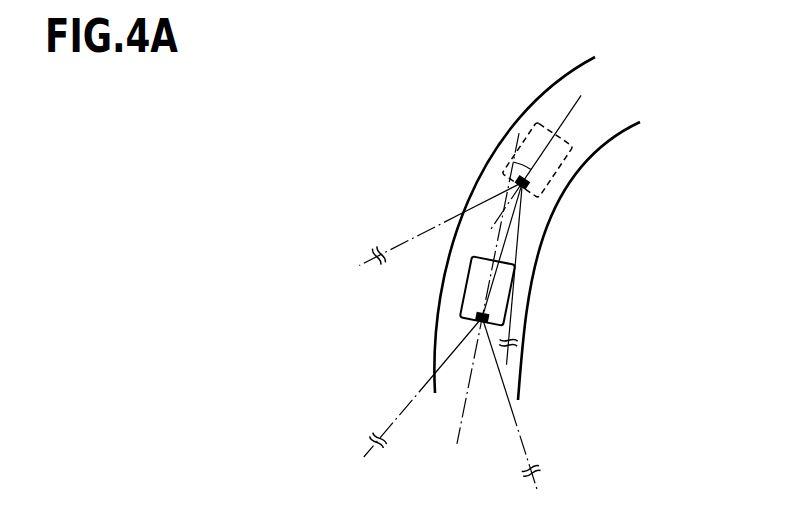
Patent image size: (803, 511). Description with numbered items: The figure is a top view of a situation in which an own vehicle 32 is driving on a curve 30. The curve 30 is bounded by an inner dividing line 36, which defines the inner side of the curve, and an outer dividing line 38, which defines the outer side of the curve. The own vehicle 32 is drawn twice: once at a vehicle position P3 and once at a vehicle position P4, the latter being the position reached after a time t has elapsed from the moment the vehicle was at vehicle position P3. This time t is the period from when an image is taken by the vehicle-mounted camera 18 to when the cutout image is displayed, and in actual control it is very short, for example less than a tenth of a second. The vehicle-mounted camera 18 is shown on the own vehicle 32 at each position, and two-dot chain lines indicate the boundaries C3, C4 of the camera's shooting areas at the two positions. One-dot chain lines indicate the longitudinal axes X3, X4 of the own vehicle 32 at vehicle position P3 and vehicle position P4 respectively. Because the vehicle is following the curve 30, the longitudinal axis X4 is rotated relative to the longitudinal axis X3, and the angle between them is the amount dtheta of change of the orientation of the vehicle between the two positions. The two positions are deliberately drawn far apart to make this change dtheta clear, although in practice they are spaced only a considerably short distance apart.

The vehicle-mounted camera 18 is at (475, 325).
The curve 30 is at (511, 228).
The own vehicle 32 is at (477, 290).
The inner dividing line 36 is at (522, 381).
The outer dividing line 38 is at (437, 359).
The longitudinal axis X3 is at (497, 240).
The longitudinal axis X4 is at (580, 95).
The boundary of shooting area C3 is at (404, 409).
The boundary of shooting area C4 is at (434, 226).
The vehicle position P3 is at (518, 295).
The vehicle position P4 is at (569, 169).
The amount of change of the orientation of the vehicle dtheta is at (513, 160).